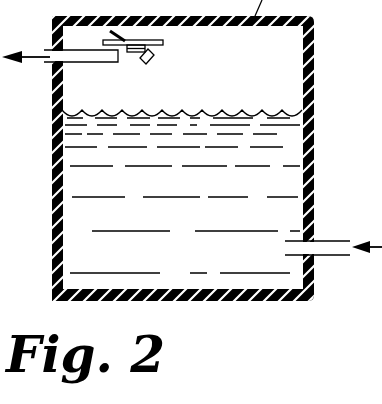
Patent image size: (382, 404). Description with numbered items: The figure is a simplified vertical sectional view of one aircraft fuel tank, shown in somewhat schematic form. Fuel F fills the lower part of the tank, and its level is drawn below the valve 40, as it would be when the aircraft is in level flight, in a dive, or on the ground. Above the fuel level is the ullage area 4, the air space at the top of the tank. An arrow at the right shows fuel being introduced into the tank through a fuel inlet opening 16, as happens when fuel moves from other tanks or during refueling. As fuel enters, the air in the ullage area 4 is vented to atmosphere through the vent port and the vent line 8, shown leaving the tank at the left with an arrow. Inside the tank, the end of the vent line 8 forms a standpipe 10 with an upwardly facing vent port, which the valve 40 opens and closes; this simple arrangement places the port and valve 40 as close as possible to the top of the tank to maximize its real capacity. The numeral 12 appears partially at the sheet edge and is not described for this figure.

The ullage area 4 is at (285, 63).
The vent line 8 is at (47, 67).
The standpipe 10 is at (123, 53).
The valve 40 is at (180, 58).
The fuel F is at (263, 163).
The fuel inlet opening 16 is at (330, 257).
The component 12 is at (374, 375).